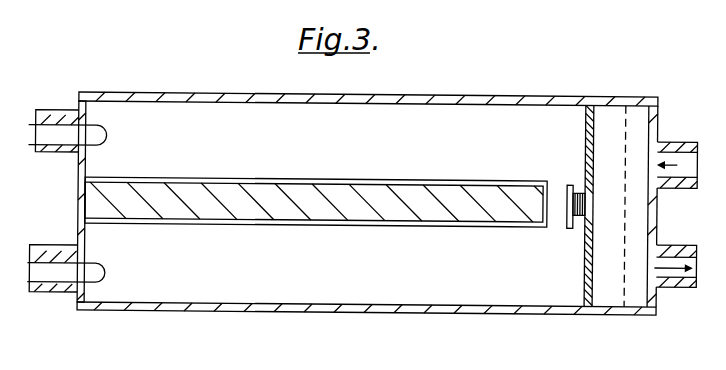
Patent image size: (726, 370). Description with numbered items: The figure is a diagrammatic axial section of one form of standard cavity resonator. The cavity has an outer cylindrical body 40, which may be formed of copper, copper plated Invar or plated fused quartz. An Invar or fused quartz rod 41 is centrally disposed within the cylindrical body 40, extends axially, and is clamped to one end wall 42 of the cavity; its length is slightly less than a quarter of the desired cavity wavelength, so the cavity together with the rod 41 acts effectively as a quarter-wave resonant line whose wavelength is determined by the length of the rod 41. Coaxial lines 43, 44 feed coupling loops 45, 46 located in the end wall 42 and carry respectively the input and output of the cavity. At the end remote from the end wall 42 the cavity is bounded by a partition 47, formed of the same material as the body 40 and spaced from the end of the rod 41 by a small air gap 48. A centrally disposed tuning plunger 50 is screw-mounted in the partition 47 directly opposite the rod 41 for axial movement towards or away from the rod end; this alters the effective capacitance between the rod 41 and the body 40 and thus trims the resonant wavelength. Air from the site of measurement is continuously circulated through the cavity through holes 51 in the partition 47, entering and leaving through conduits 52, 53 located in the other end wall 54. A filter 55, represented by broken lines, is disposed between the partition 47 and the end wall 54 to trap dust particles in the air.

The outer cylindrical body 40 is at (350, 308).
The rod 41 is at (427, 199).
The end wall 42 is at (78, 168).
The coaxial line 43 is at (60, 268).
The coaxial line 44 is at (50, 123).
The coupling loop 45 is at (106, 271).
The coupling loop 46 is at (106, 131).
The partition 47 is at (585, 238).
The air gap 48 is at (562, 198).
The tuning plunger 50 is at (567, 221).
The holes 51 is at (595, 133).
The conduit 52 is at (680, 155).
The conduit 53 is at (688, 272).
The end wall 54 is at (652, 222).
The filter 55 is at (630, 122).